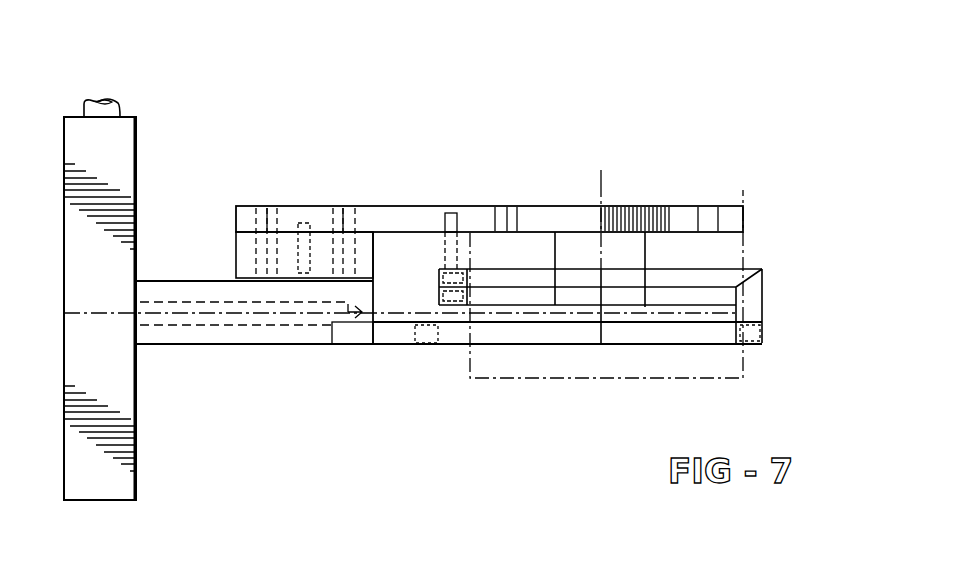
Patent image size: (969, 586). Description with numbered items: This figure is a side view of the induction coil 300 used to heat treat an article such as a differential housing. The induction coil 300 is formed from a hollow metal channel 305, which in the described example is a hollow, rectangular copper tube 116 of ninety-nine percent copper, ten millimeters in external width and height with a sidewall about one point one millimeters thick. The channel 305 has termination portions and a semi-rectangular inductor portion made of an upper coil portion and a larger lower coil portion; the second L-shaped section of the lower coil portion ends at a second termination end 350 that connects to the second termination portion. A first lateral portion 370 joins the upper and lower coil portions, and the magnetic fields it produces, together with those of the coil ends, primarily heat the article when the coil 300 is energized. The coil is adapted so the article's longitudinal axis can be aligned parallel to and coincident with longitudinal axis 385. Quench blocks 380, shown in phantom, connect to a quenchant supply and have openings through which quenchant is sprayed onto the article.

The induction coil 300 is at (452, 195).
The longitudinal axis 385 is at (601, 185).
The copper tube 116 is at (708, 280).
The first lateral portion 370 is at (762, 300).
The hollow metal channel 305 is at (763, 328).
The second termination end 350 is at (763, 335).
The quench blocks 380 is at (620, 378).